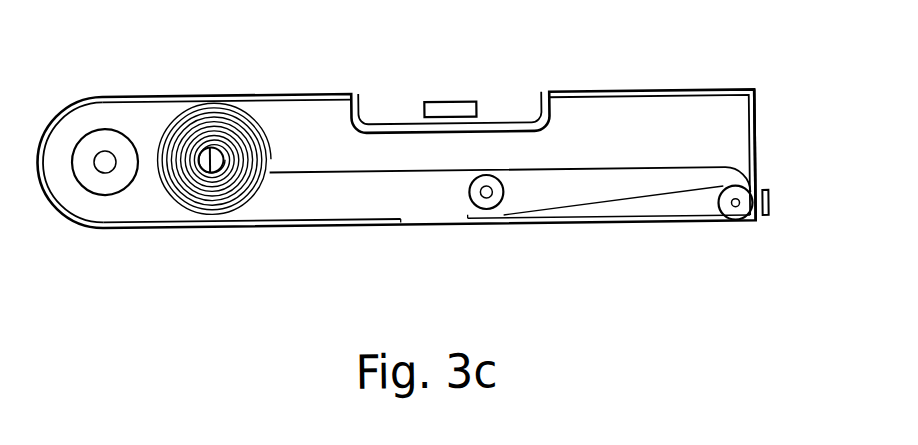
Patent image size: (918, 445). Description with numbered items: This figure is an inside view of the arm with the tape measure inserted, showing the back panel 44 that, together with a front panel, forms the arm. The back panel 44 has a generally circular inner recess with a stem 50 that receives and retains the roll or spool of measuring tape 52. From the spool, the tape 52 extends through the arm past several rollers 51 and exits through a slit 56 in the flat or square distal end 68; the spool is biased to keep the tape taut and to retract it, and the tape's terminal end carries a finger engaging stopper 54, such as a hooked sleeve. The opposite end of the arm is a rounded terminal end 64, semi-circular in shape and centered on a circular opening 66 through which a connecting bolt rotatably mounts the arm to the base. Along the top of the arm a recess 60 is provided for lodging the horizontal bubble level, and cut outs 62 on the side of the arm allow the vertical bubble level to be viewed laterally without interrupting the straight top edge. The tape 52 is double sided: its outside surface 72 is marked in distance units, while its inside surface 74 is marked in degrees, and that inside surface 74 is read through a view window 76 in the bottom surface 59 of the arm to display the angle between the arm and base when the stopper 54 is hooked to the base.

The back panel 44 is at (340, 89).
The stem 50 is at (200, 147).
The rollers 51 is at (506, 206).
The measuring tape 52 is at (260, 124).
The finger engaging stopper 54 is at (770, 211).
The slit 56 is at (770, 177).
The bottom surface 59 is at (285, 232).
The recess 60 is at (514, 117).
The cut outs 62 is at (448, 98).
The rounded terminal end 64 is at (45, 201).
The circular opening 66 is at (90, 157).
The distal end 68 is at (762, 116).
The outside surface 72 is at (644, 196).
The inside surface 74 is at (603, 215).
The view window 76 is at (430, 232).